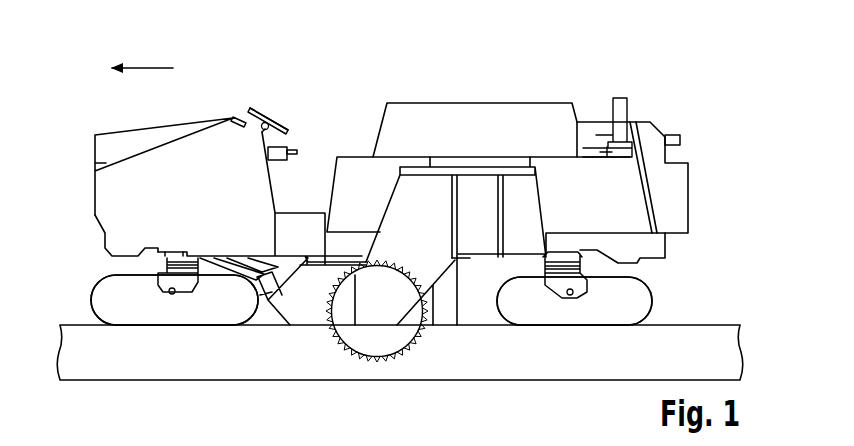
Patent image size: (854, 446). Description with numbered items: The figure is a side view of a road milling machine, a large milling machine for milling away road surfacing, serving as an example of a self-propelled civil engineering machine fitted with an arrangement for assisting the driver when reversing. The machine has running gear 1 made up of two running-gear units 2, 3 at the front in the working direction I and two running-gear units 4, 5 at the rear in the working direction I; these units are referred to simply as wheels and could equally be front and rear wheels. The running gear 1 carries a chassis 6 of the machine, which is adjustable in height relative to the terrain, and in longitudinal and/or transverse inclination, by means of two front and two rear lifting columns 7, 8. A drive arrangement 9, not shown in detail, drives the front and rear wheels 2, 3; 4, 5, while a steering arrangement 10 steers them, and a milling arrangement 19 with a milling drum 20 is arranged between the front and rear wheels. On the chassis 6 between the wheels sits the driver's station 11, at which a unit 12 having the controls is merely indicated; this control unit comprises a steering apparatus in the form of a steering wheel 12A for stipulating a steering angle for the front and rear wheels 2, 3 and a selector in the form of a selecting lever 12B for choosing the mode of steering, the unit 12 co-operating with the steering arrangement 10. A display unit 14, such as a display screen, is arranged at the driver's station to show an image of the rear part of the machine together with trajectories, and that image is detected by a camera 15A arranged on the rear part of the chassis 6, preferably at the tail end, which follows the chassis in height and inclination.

The running gear 1 is at (82, 266).
The front running-gear unit 2 is at (95, 302).
The front running-gear unit 3 is at (95, 302).
The rear running-gear unit 4 is at (643, 302).
The rear running-gear unit 5 is at (643, 302).
The chassis of the machine 6 is at (628, 178).
The front lifting column 7 is at (170, 249).
The rear lifting column 8 is at (560, 256).
The drive arrangement 9 is at (477, 197).
The steering arrangement 10 is at (166, 238).
The driver's station 11 is at (373, 77).
The unit having the controls 12 is at (297, 95).
The steering wheel 12A is at (267, 118).
The selecting lever 12B is at (290, 145).
The display unit 14 is at (239, 116).
The camera 15A is at (682, 140).
The milling arrangement 19 is at (367, 333).
The milling drum 20 is at (413, 344).
The working direction I is at (147, 67).